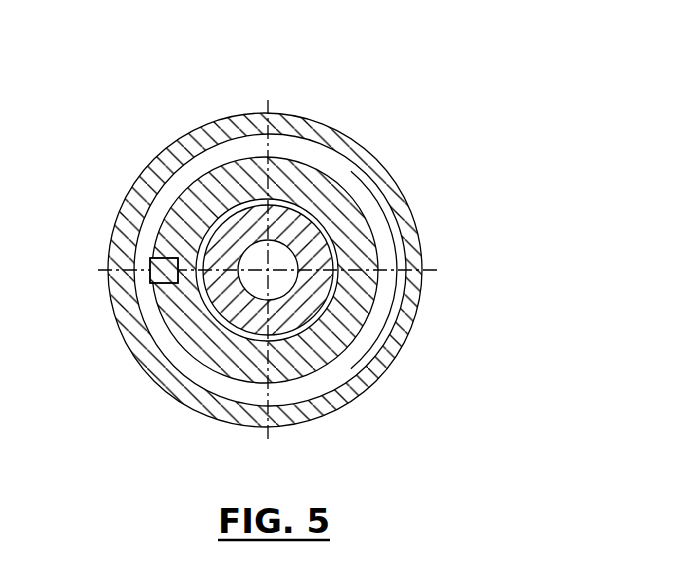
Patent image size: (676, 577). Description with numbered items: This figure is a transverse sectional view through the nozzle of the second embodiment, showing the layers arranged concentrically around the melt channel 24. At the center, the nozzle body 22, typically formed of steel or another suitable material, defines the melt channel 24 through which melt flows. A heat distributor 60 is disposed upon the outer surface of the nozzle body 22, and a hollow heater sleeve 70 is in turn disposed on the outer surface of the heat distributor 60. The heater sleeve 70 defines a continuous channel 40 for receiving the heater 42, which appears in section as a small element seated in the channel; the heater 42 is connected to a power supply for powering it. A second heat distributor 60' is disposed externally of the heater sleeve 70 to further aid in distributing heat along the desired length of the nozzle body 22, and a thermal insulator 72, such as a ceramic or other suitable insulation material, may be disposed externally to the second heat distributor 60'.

The body 22 is at (392, 231).
The melt channel 24 is at (354, 213).
The continuous channel 40 is at (124, 297).
The heater 42 is at (150, 264).
The heat distributor 60 is at (340, 270).
The second heat distributor 60' is at (287, 270).
The heater sleeve 70 is at (388, 311).
The thermal insulator 72 is at (350, 402).